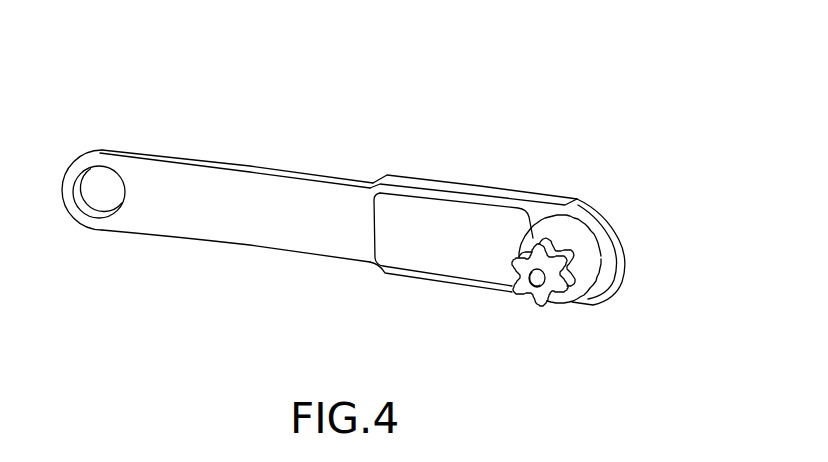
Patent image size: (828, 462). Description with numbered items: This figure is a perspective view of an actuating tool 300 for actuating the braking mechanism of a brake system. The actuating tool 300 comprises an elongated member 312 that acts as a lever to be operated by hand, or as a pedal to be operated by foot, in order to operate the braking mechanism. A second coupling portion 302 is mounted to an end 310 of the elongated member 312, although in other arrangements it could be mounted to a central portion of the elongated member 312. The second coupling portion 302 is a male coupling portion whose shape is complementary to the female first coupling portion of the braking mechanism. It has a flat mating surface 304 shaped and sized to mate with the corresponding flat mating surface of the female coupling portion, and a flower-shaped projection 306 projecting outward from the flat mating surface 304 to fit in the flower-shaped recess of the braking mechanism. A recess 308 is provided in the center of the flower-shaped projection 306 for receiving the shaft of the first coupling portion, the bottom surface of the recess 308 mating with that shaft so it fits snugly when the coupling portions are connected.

The actuating tool 300 is at (398, 235).
The second coupling portion 302 is at (568, 300).
The flat mating surface 304 is at (562, 252).
The flower-shaped projection 306 is at (503, 300).
The recess 308 is at (535, 288).
The end 310 is at (610, 268).
The elongated member 312 is at (285, 192).